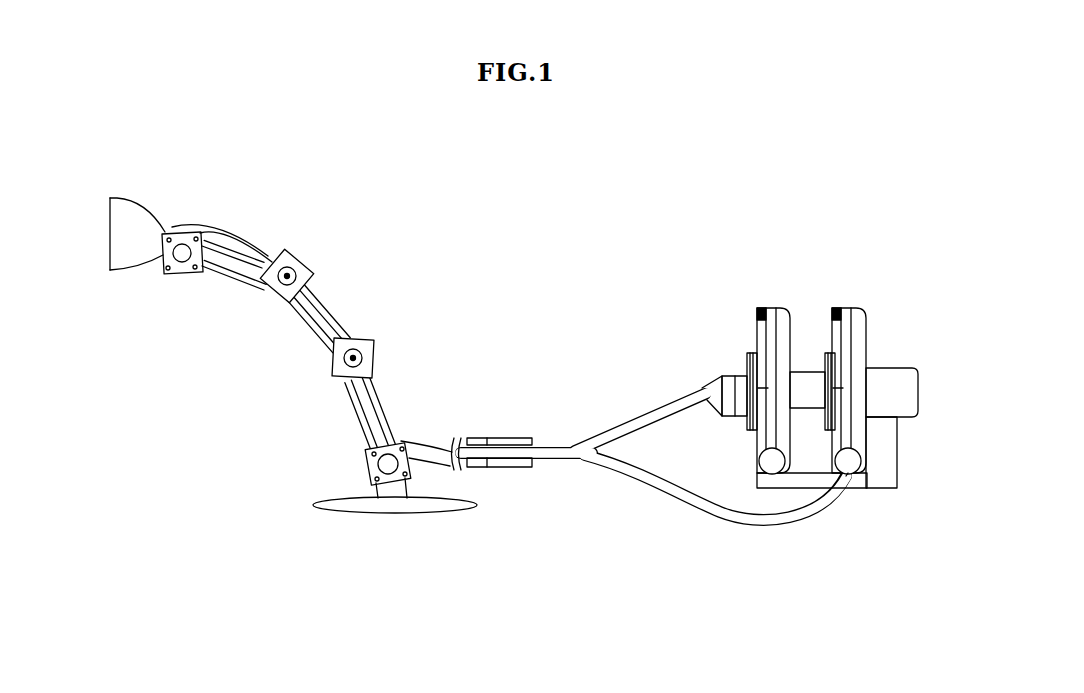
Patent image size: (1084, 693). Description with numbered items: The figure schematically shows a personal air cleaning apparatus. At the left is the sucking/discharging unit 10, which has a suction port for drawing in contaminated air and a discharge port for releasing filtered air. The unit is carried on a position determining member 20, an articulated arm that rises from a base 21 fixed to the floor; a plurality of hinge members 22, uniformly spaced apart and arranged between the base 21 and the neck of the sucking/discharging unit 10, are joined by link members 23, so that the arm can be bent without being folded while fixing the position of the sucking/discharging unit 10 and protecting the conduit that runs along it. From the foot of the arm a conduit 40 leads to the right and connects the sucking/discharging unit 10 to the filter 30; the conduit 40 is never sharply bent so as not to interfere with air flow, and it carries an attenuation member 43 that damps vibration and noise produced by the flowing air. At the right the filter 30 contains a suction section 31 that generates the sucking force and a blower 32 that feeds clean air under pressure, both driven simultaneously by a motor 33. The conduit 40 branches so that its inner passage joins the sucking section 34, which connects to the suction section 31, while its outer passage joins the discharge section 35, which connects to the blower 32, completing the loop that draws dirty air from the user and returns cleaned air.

The sucking/discharging unit 10 is at (145, 290).
The position determining member 20 is at (330, 423).
The base 21 is at (396, 508).
The hinge members 22 is at (375, 345).
The link members 23 is at (330, 298).
The filter 30 is at (828, 228).
The suction section 31 is at (771, 308).
The blower 32 is at (848, 308).
The motor 33 is at (893, 377).
The sucking section 34 is at (722, 380).
The discharge section 35 is at (853, 463).
The conduit 40 is at (548, 443).
The attenuation member 43 is at (487, 438).